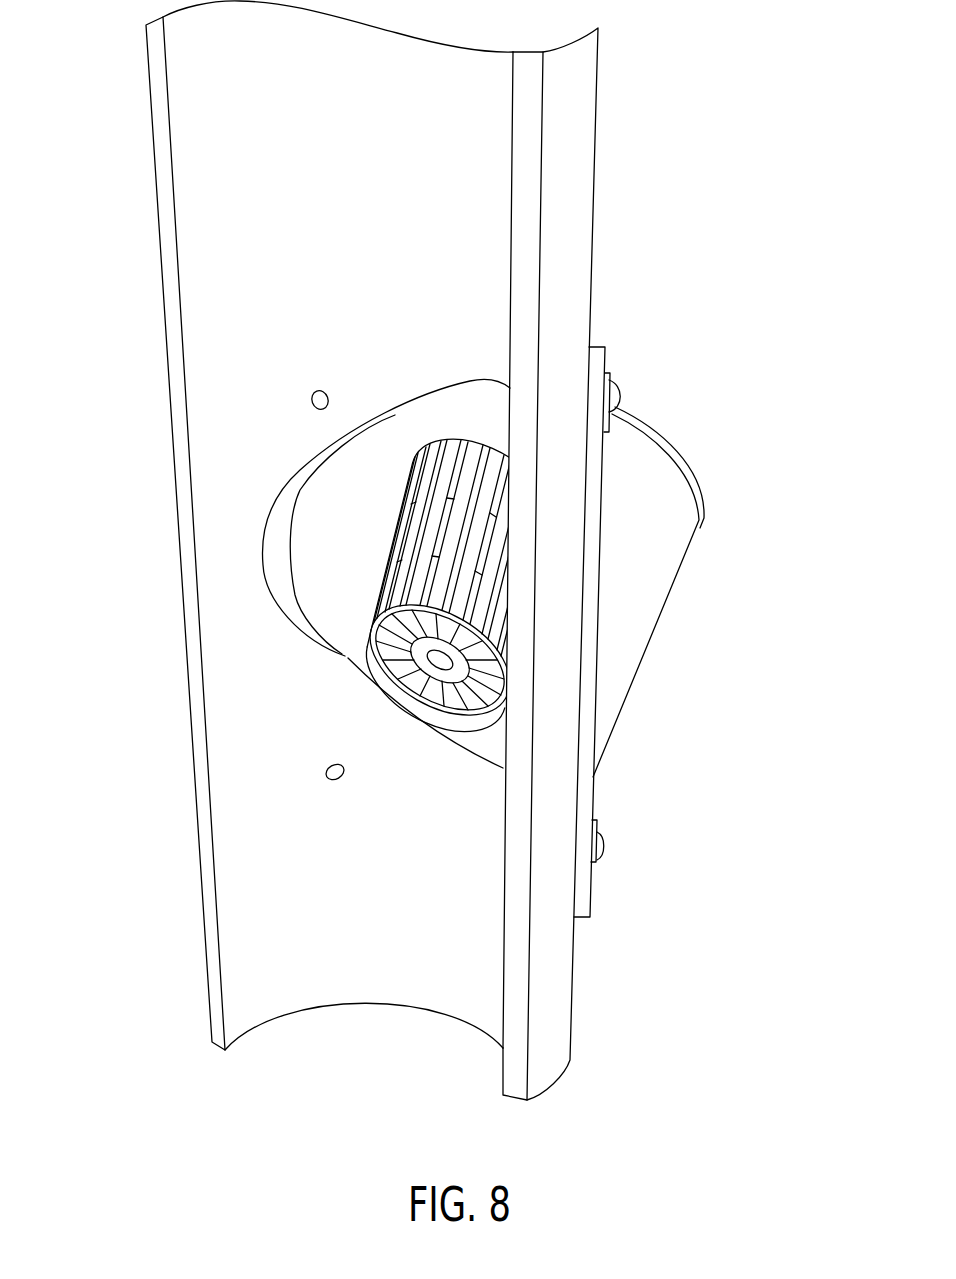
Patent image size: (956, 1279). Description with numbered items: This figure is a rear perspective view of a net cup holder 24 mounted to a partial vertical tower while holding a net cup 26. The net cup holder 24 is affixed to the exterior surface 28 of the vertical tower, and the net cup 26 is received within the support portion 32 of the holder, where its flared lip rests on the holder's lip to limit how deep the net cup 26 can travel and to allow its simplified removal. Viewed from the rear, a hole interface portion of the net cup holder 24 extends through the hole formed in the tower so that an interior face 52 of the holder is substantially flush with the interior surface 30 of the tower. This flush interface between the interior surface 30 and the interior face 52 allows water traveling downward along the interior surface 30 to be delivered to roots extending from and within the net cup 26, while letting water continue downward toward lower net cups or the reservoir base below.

The net cup holder 24 is at (684, 632).
The net cup 26 is at (348, 660).
The exterior surface 28 is at (572, 232).
The interior surface 30 is at (225, 292).
The support portion 32 is at (643, 565).
The interior face 52 is at (401, 442).